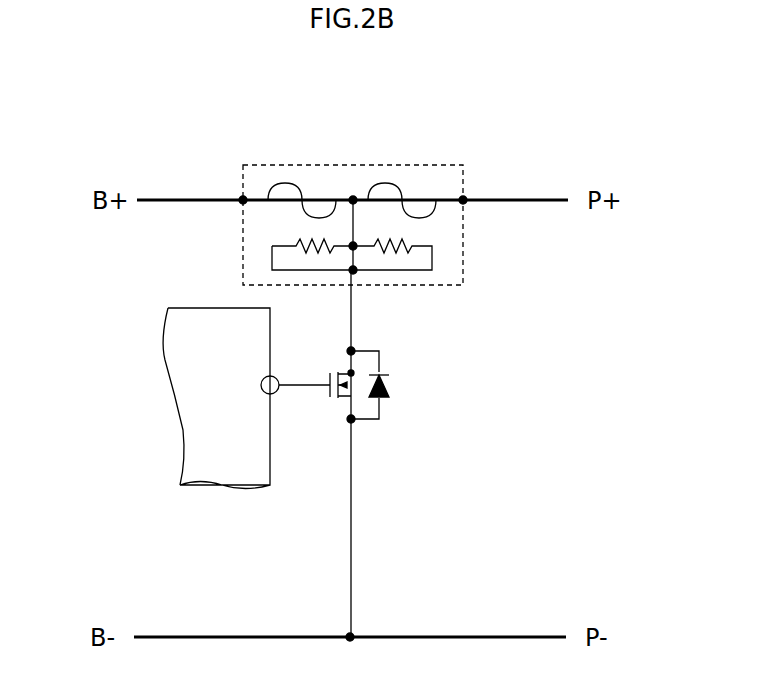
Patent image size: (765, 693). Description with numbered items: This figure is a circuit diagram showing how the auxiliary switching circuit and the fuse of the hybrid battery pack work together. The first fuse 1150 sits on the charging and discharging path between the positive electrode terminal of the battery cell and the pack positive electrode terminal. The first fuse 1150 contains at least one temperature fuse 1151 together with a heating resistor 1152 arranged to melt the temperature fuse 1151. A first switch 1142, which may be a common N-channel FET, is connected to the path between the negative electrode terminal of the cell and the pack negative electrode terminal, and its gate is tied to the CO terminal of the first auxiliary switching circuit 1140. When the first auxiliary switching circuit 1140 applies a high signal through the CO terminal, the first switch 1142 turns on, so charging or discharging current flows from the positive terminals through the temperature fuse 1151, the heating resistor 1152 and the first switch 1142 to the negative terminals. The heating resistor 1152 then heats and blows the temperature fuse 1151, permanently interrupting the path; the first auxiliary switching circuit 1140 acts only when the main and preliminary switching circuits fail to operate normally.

The first auxiliary switching circuit 1140 is at (221, 488).
The first switch 1142 is at (345, 403).
The first fuse 1150 is at (422, 165).
The temperature fuse 1151 is at (302, 183).
The heating resistor 1152 is at (432, 242).